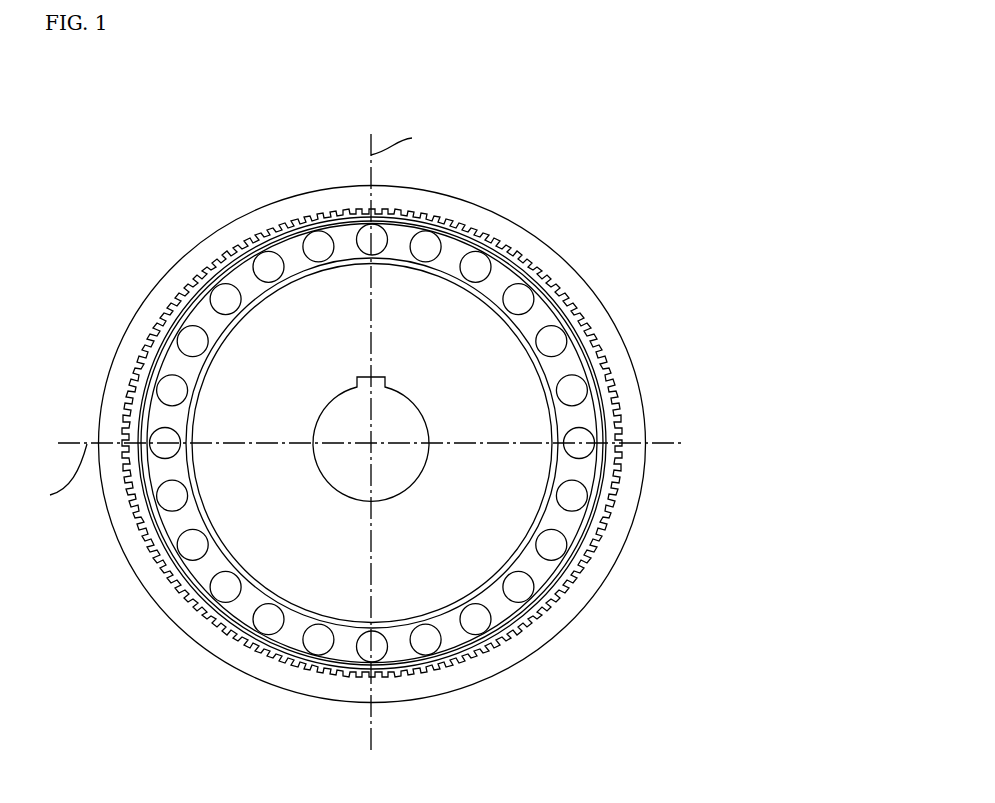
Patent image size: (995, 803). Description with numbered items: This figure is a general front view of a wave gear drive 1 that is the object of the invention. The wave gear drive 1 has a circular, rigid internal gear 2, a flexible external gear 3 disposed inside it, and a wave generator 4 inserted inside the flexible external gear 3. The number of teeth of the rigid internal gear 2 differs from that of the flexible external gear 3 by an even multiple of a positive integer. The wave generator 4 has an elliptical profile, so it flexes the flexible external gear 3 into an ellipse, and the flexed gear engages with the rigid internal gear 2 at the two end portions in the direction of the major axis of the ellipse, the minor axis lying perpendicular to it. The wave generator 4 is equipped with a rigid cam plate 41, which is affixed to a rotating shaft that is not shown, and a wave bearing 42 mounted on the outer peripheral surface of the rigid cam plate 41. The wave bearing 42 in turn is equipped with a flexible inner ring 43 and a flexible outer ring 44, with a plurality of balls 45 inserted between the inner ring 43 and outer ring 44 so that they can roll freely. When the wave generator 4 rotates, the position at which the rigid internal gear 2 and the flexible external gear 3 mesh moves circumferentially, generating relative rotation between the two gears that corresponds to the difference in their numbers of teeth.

The wave gear drive 1 is at (574, 180).
The rigid internal gear 2 is at (577, 294).
The flexible external gear 3 is at (591, 349).
The wave generator 4 is at (510, 411).
The rigid cam plate 41 is at (572, 582).
The wave bearing 42 is at (520, 525).
The inner ring 43 is at (600, 473).
The outer ring 44 is at (580, 498).
The balls 45 is at (572, 525).